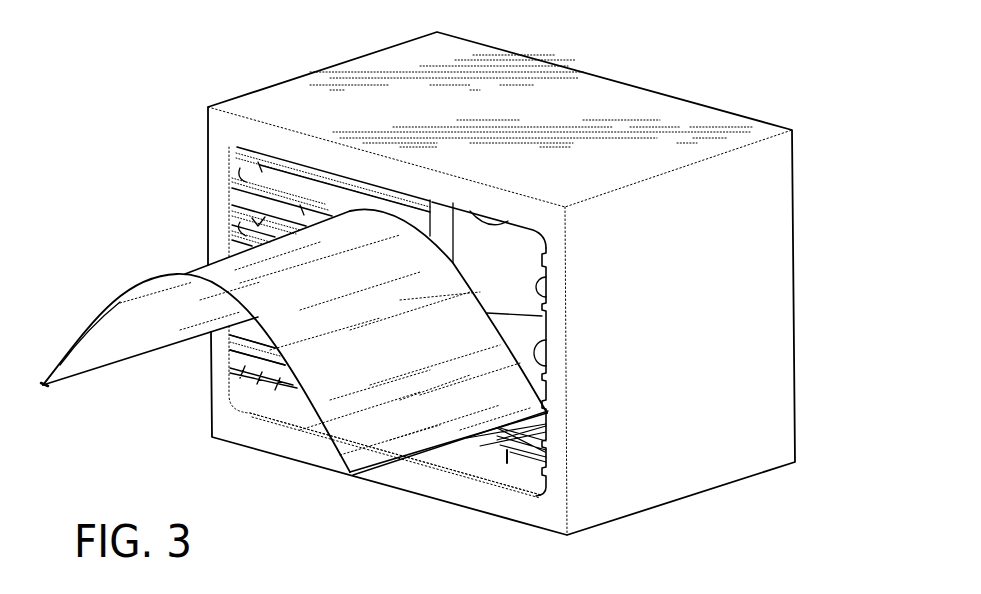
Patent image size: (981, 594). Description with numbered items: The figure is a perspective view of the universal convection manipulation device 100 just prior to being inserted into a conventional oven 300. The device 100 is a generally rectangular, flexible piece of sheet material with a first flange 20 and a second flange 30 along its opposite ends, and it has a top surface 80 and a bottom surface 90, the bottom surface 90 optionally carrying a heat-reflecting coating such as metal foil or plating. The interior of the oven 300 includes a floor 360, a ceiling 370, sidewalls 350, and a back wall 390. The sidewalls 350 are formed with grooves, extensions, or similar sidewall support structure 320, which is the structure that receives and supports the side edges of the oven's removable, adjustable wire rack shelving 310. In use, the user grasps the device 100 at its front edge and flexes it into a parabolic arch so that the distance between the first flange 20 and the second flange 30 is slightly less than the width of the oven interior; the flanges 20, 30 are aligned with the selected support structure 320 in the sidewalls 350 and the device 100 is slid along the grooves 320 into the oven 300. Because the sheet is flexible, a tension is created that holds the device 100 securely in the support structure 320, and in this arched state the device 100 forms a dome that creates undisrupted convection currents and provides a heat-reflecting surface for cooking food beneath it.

The conventional oven 300 is at (302, 112).
The ceiling 370 is at (500, 222).
The back wall 390 is at (516, 278).
The sidewall support structure 320 is at (237, 187).
The sidewalls 350 is at (243, 202).
The top surface 80 is at (347, 442).
The wire rack shelving 310 is at (272, 400).
The floor 360 is at (530, 478).
The second flange 30 is at (378, 468).
The first flange 20 is at (40, 380).
The bottom surface 90 is at (82, 360).
The universal convection manipulation device 100 is at (170, 373).